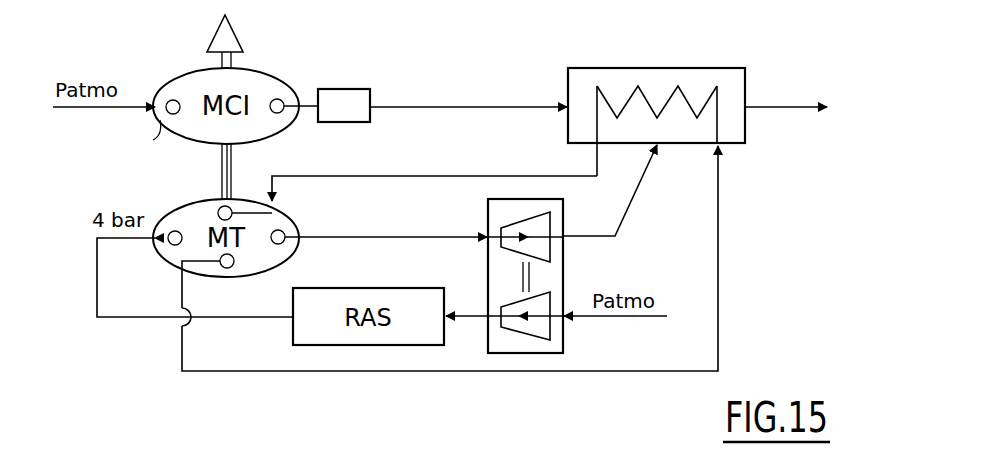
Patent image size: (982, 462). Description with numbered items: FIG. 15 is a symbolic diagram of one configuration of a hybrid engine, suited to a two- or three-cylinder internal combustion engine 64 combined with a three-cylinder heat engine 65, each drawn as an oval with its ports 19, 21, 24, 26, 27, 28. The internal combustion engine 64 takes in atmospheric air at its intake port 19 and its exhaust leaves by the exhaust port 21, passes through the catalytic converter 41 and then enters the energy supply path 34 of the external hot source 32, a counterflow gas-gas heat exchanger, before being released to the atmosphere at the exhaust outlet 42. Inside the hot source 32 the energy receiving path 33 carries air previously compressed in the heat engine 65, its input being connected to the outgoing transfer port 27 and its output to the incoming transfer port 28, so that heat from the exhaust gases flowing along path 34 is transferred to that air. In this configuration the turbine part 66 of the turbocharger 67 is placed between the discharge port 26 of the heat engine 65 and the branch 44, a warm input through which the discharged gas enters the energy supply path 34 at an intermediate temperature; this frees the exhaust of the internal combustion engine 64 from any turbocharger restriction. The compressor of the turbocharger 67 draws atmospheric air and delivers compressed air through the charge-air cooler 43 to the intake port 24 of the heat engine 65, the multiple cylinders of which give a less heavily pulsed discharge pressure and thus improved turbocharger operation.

The intake port 19 is at (170, 96).
The exhaust port 21 is at (280, 96).
The intake port 24 is at (172, 230).
The discharge port 26 is at (290, 230).
The outgoing transfer port 27 is at (230, 268).
The incoming transfer port 28 is at (218, 206).
The external hot source 32 is at (590, 66).
The energy receiving path 33 is at (690, 98).
The energy supply path 34 is at (653, 77).
The catalytic converter 41 is at (355, 88).
The exhaust outlet 42 is at (778, 107).
The charge-air cooler 43 is at (380, 347).
The branch 44 is at (682, 144).
The internal combustion engine 64 is at (160, 125).
The heat engine 65 is at (160, 258).
The turbine part 66 is at (565, 224).
The turbocharger 67 is at (487, 215).